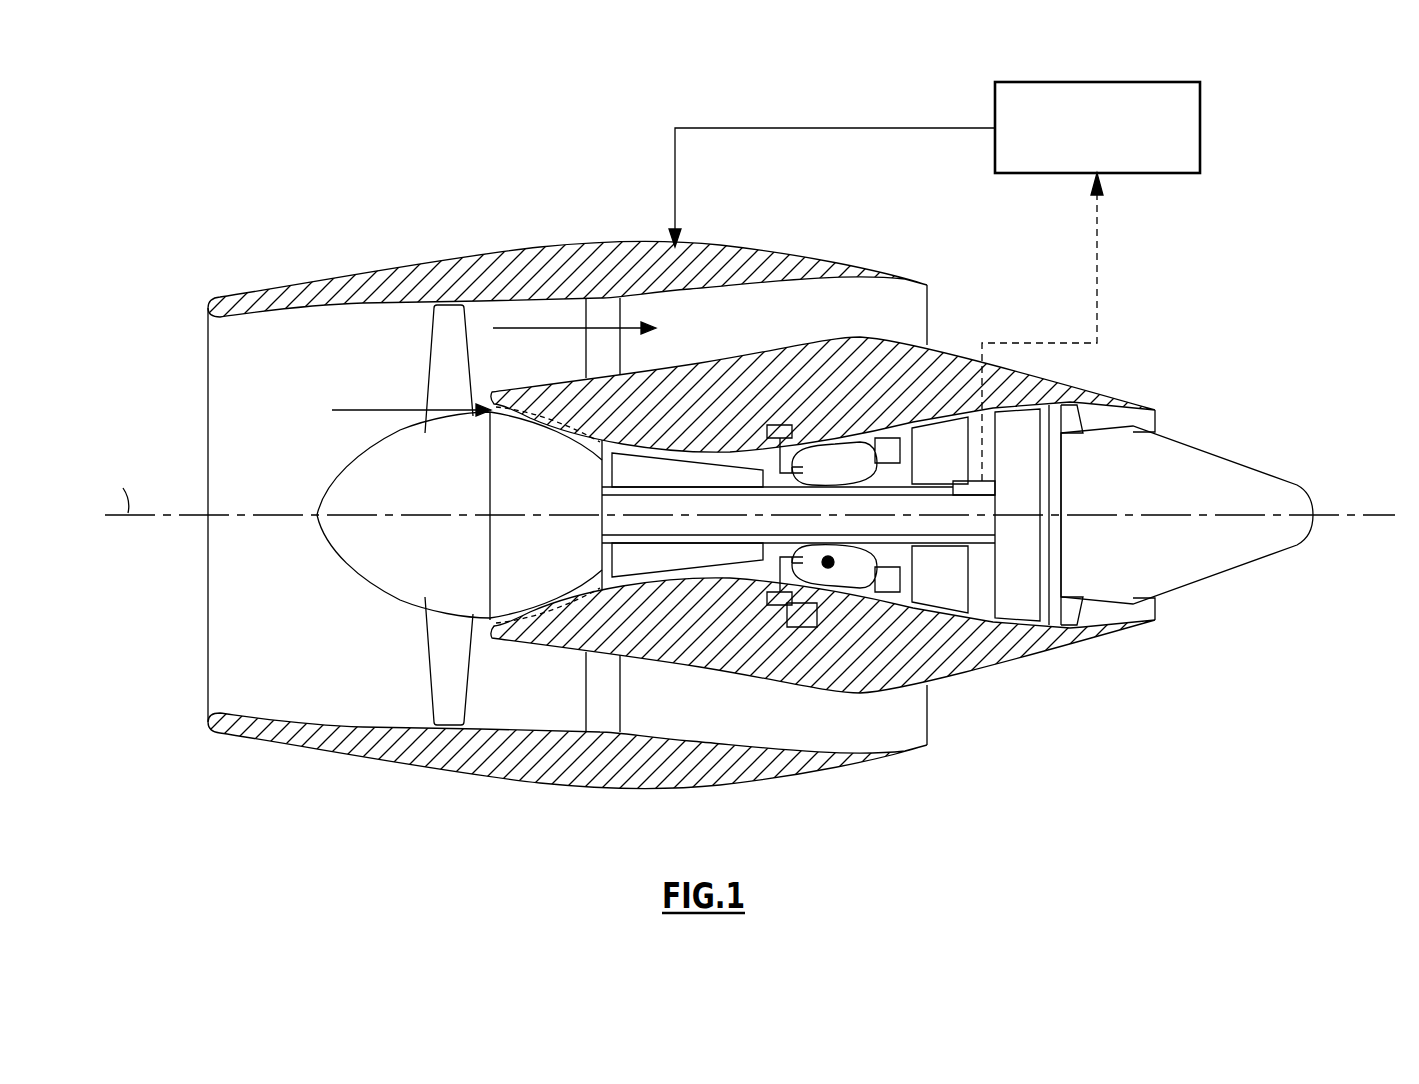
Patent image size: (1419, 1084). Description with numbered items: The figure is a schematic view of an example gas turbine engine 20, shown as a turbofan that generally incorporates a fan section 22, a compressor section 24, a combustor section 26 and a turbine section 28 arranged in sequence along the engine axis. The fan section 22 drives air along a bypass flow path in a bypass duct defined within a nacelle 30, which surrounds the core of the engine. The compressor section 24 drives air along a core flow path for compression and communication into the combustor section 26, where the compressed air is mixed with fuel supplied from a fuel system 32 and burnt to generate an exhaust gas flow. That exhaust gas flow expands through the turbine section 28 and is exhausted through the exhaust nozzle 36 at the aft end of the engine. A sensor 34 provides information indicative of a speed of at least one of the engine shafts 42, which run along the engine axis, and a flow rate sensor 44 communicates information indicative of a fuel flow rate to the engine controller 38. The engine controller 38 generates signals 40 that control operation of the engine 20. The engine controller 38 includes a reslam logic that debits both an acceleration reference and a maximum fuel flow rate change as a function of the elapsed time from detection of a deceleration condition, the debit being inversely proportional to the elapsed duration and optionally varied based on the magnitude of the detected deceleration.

The gas turbine engine 20 is at (219, 219).
The fan section 22 is at (360, 222).
The compressor section 24 is at (608, 357).
The combustor section 26 is at (778, 332).
The turbine section 28 is at (910, 332).
The nacelle 30 is at (560, 268).
The fuel system 32 is at (779, 603).
The sensor 34 is at (995, 488).
The exhaust nozzle 36 is at (1200, 480).
The engine controller 38 is at (1155, 174).
The signals 40 is at (675, 172).
The engine shafts 42 is at (655, 516).
The flow rate sensor 44 is at (803, 628).